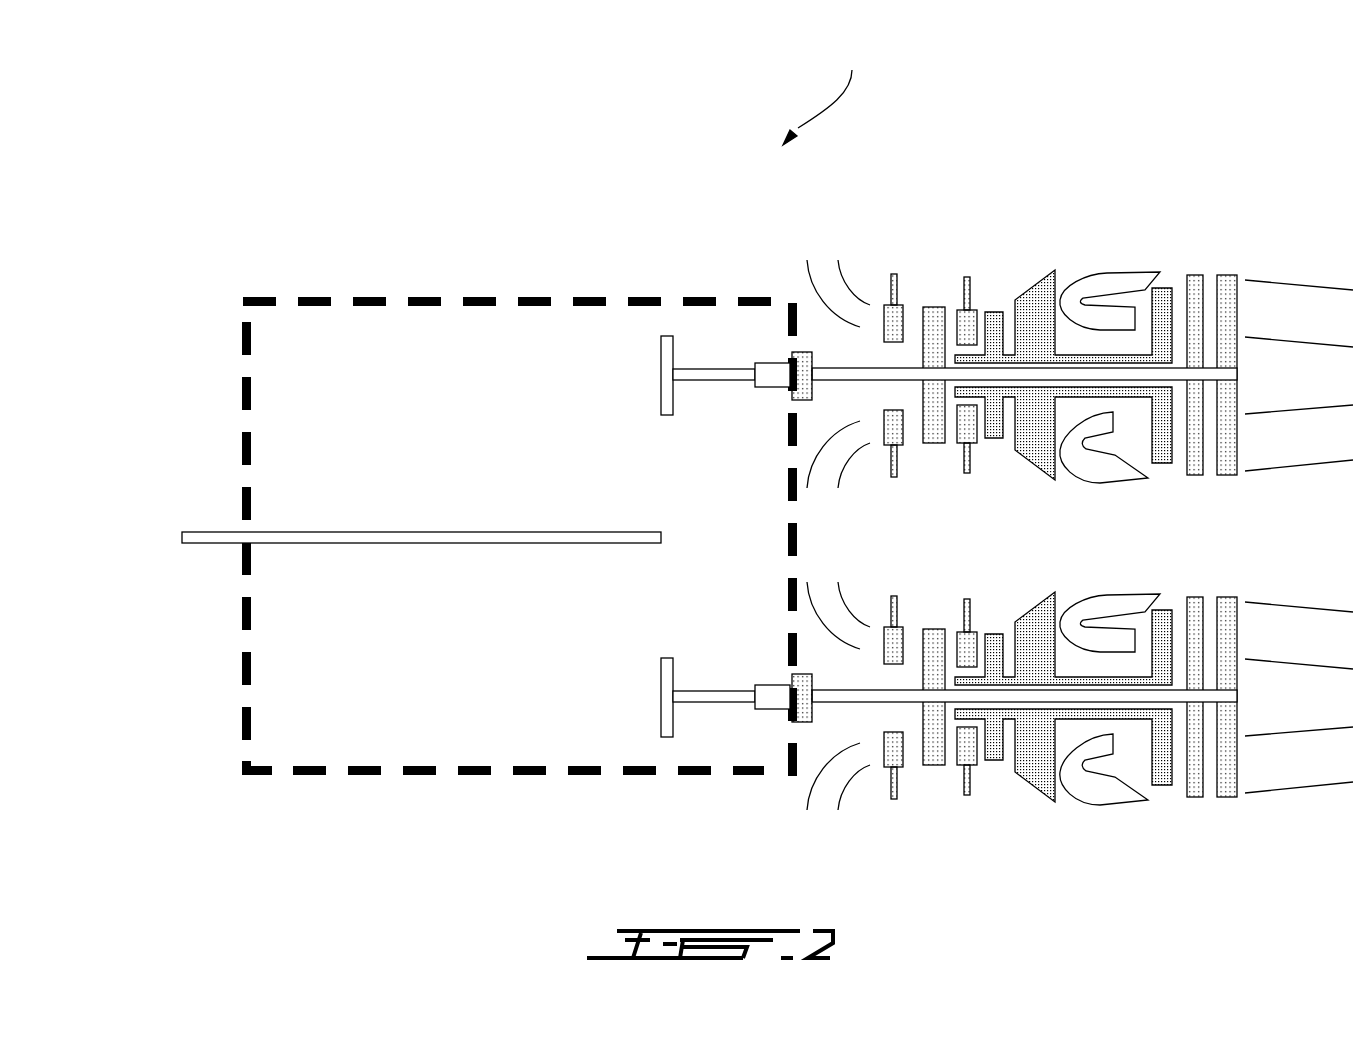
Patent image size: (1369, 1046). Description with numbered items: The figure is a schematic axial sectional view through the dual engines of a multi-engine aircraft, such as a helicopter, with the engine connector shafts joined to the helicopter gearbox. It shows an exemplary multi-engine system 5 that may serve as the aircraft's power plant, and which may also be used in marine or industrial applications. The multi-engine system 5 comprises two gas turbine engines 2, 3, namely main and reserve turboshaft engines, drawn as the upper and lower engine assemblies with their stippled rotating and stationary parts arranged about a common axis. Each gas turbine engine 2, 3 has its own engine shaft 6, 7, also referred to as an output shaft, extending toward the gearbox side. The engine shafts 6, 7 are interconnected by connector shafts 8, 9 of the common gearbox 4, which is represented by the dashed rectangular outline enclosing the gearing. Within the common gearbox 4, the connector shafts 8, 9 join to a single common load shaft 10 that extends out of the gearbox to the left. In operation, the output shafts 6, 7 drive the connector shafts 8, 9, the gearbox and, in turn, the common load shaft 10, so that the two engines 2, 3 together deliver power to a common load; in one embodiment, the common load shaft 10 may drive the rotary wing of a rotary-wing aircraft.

The gas turbine engine 2 is at (1123, 270).
The gas turbine engine 3 is at (1113, 800).
The common gearbox 4 is at (485, 297).
The multi-engine drive system 5 is at (825, 90).
The engine shaft 6 is at (840, 368).
The engine shaft 7 is at (850, 697).
The connector shaft 8 is at (713, 368).
The connector shaft 9 is at (710, 697).
The common load shaft 10 is at (210, 530).